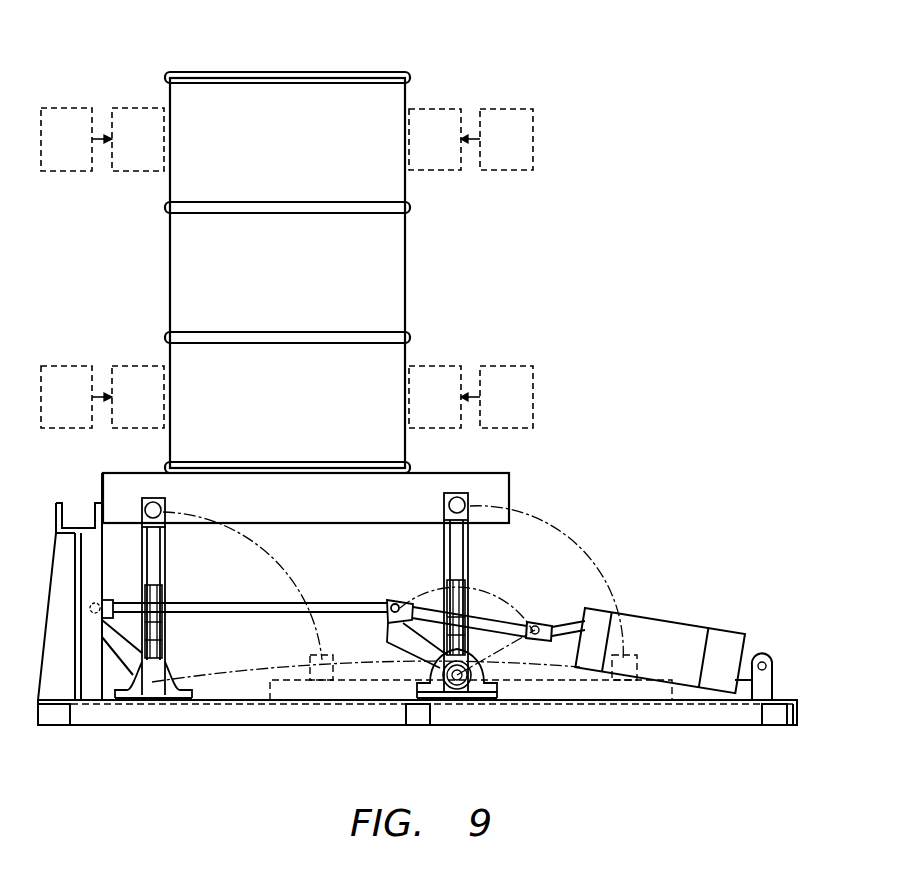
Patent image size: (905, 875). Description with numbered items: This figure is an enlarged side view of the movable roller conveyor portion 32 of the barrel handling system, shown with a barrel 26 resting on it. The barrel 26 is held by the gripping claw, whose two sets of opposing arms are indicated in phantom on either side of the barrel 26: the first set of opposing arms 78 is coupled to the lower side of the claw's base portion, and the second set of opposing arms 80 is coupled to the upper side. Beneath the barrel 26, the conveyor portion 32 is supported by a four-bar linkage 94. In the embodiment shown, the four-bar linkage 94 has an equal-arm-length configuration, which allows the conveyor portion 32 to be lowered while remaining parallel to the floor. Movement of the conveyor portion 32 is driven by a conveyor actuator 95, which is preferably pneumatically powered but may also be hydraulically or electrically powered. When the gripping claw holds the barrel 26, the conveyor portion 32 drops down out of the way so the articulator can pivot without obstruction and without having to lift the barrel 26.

The barrel 26 is at (237, 93).
The second set of opposing arms 80 is at (63, 107).
The first set of opposing arms 78 is at (63, 365).
The movable roller conveyor portion 32 is at (500, 487).
The four-bar linkage 94 is at (160, 560).
The conveyor actuator 95 is at (675, 637).